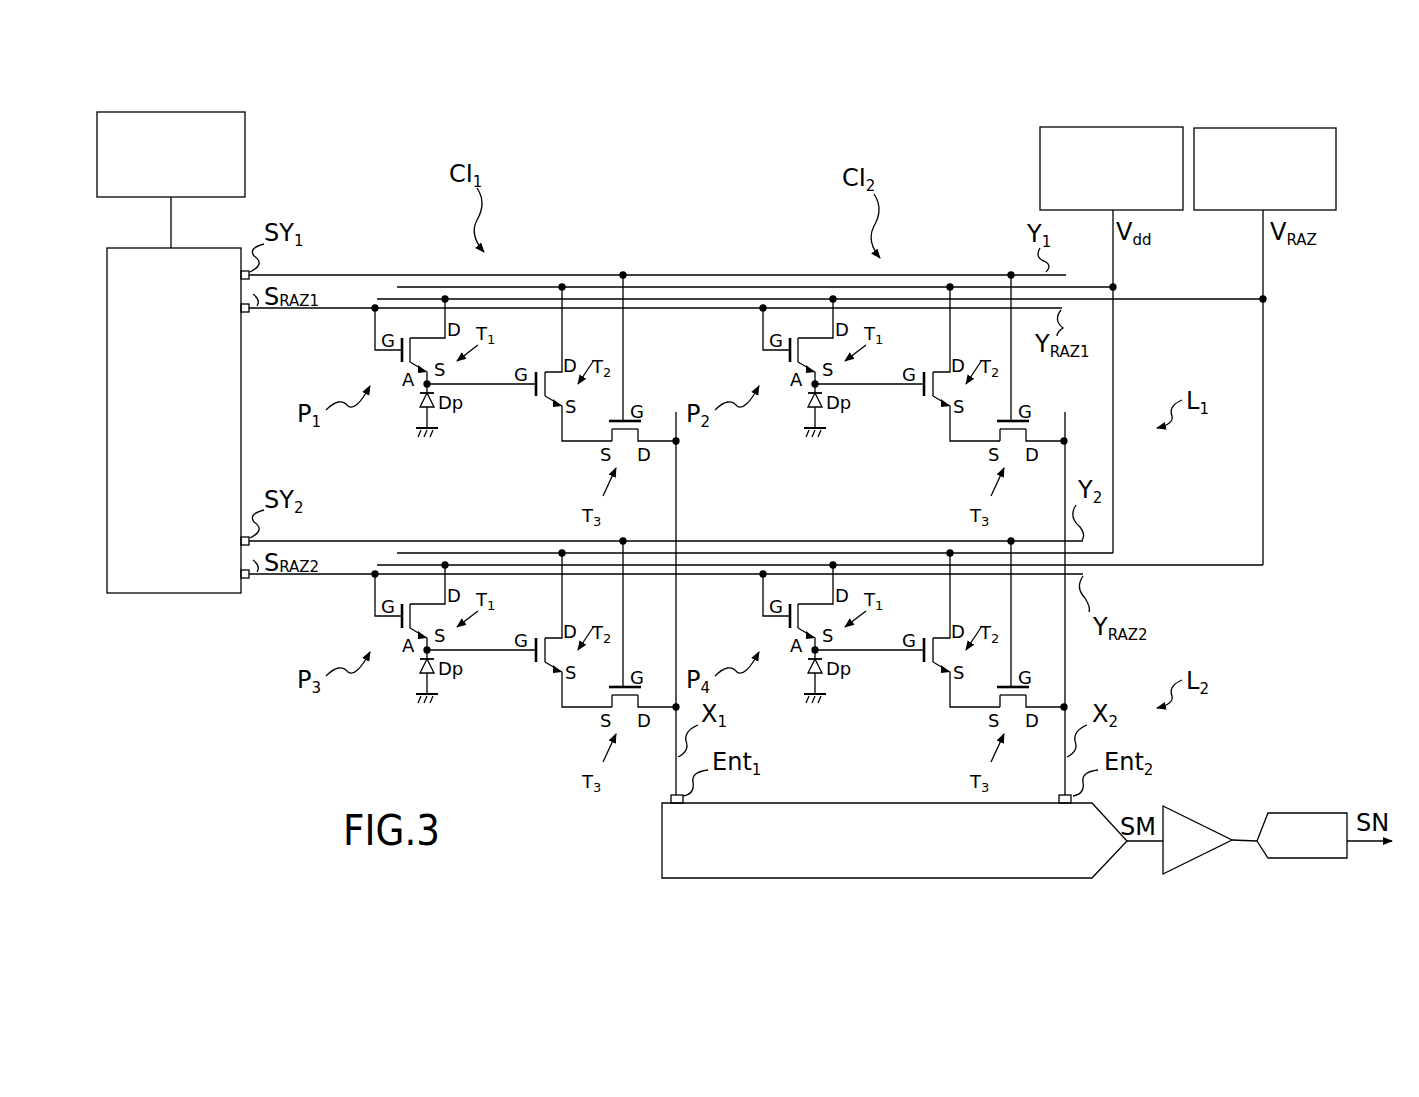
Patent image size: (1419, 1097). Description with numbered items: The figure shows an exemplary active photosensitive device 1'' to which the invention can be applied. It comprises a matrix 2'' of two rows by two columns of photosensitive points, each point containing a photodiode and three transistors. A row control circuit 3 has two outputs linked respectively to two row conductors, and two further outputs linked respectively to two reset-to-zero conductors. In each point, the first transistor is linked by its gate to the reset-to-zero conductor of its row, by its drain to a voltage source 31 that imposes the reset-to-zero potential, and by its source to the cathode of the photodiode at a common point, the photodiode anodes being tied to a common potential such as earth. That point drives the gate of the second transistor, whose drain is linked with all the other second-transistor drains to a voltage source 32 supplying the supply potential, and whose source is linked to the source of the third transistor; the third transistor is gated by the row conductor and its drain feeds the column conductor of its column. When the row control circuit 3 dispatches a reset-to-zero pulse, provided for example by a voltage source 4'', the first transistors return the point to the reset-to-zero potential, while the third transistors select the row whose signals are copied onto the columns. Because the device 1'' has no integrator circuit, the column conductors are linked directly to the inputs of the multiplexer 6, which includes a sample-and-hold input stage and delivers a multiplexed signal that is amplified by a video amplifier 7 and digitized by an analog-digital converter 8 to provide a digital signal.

The photosensitive device 1'' is at (800, 535).
The matrix 2'' is at (719, 457).
The row control circuit 3 is at (103, 371).
The voltage source 4'' is at (204, 170).
The multiplexer 6 is at (1018, 879).
The video amplifier 7 is at (1210, 849).
The analog-digital converter 8 is at (1303, 859).
The voltage source 31 is at (1220, 129).
The voltage source 32 is at (1063, 127).